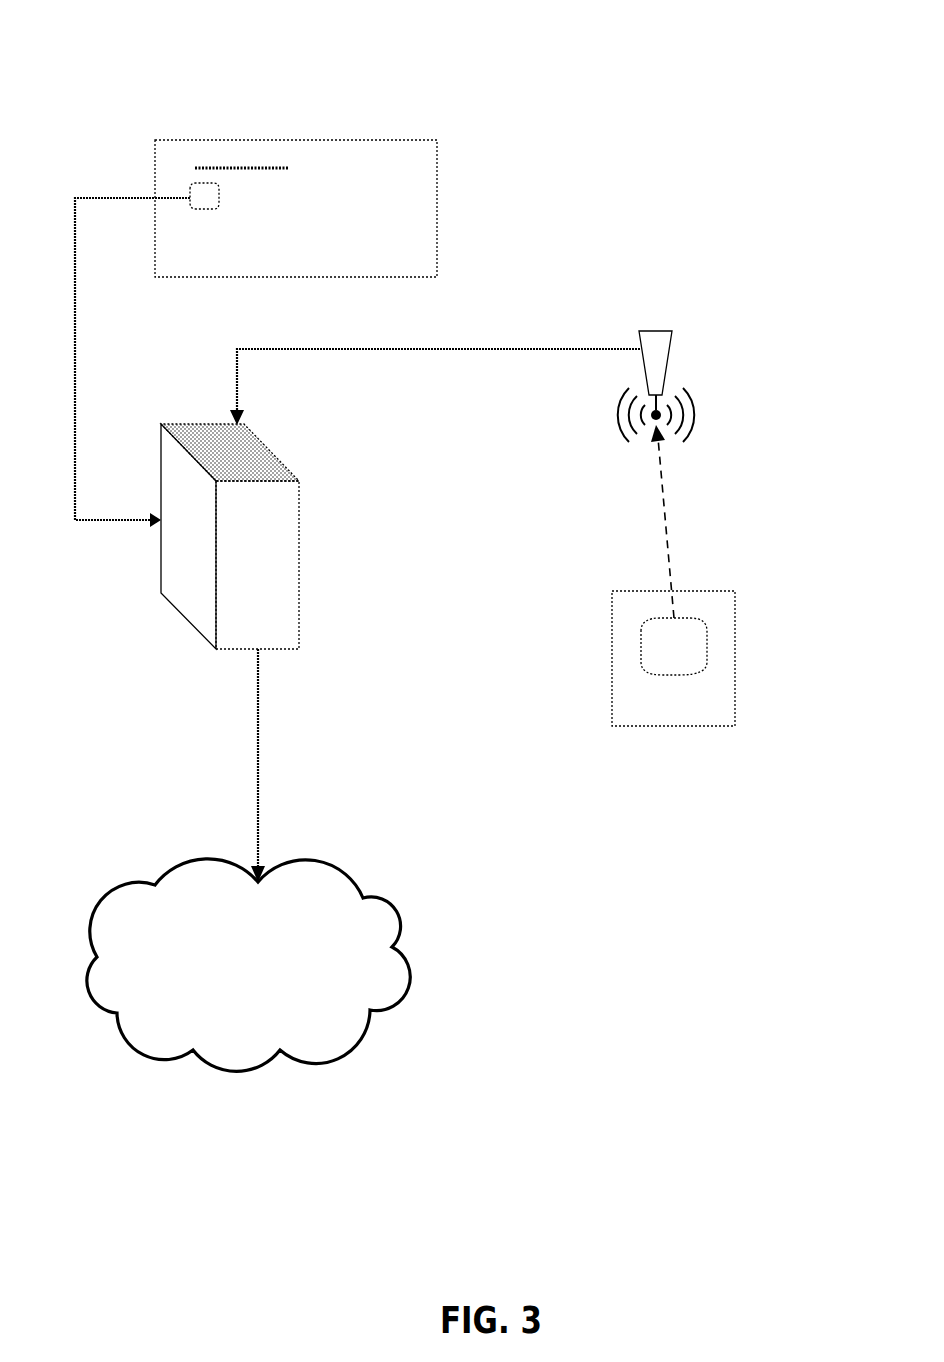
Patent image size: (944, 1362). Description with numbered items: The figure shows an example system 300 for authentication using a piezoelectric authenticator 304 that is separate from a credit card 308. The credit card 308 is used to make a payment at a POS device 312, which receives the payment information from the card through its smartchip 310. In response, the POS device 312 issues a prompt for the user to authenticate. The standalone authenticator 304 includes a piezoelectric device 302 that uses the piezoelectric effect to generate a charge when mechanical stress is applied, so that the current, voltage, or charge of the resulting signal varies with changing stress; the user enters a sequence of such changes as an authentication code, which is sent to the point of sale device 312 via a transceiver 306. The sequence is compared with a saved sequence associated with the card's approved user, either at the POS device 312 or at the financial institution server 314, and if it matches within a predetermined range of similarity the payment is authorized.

The system 300 is at (119, 42).
The piezoelectric device 302 is at (707, 645).
The piezoelectric authenticator 304 is at (735, 591).
The transceiver 306 is at (672, 331).
The credit card 308 is at (420, 190).
The smartchip 310 is at (190, 191).
The POS device 312 is at (203, 422).
The financial institution server 314 is at (248, 965).